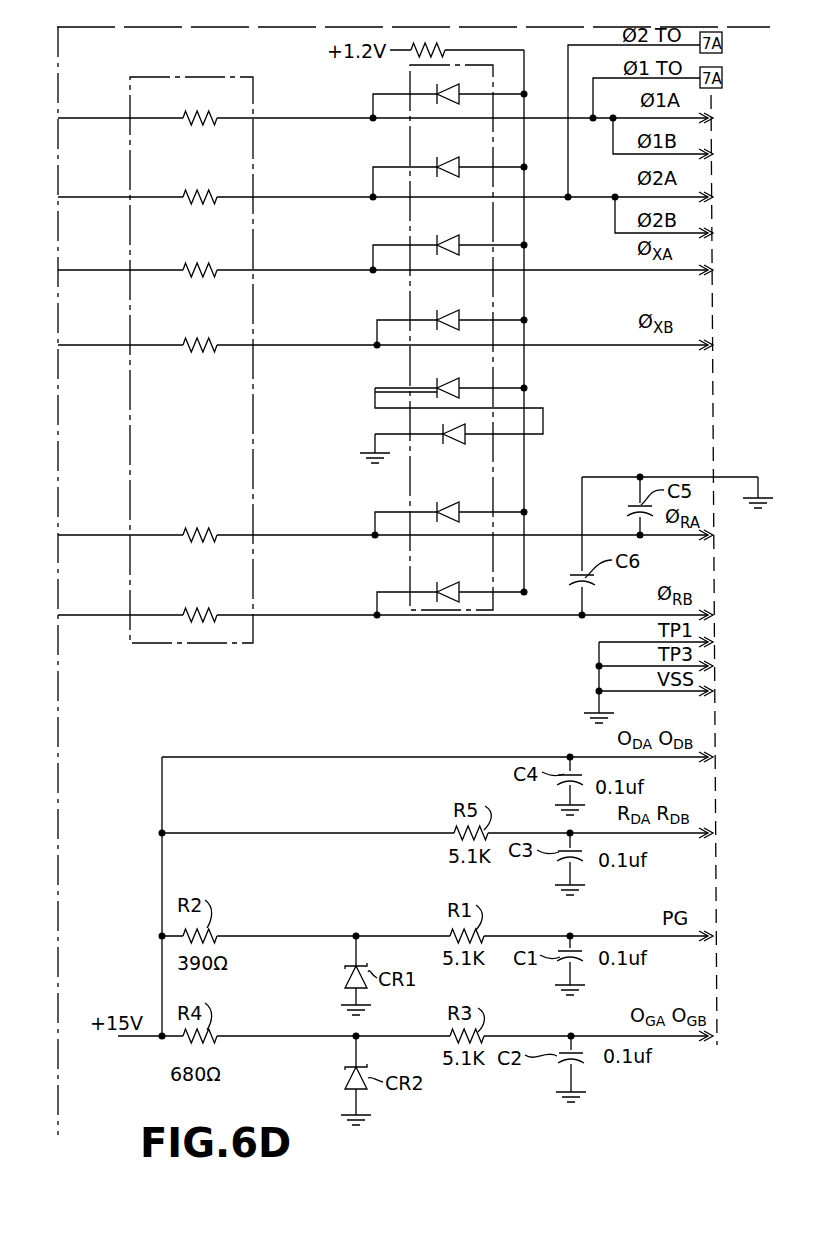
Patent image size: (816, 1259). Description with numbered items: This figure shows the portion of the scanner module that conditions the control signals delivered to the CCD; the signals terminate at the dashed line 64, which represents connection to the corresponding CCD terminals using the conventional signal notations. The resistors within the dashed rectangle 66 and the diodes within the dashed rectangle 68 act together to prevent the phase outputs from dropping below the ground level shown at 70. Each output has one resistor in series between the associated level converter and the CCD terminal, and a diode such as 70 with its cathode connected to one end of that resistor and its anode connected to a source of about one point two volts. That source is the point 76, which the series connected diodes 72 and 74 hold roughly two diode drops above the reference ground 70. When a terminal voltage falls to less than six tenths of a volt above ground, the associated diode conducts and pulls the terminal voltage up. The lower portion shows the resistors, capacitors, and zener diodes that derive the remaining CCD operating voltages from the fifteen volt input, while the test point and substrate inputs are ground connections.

The dashed line 64 is at (722, 389).
The dashed rectangle 66 is at (238, 643).
The dashed rectangle 68 is at (425, 612).
The reference ground 70 is at (447, 238).
The diode 72 is at (457, 375).
The diode 74 is at (460, 444).
The point 76 is at (524, 366).